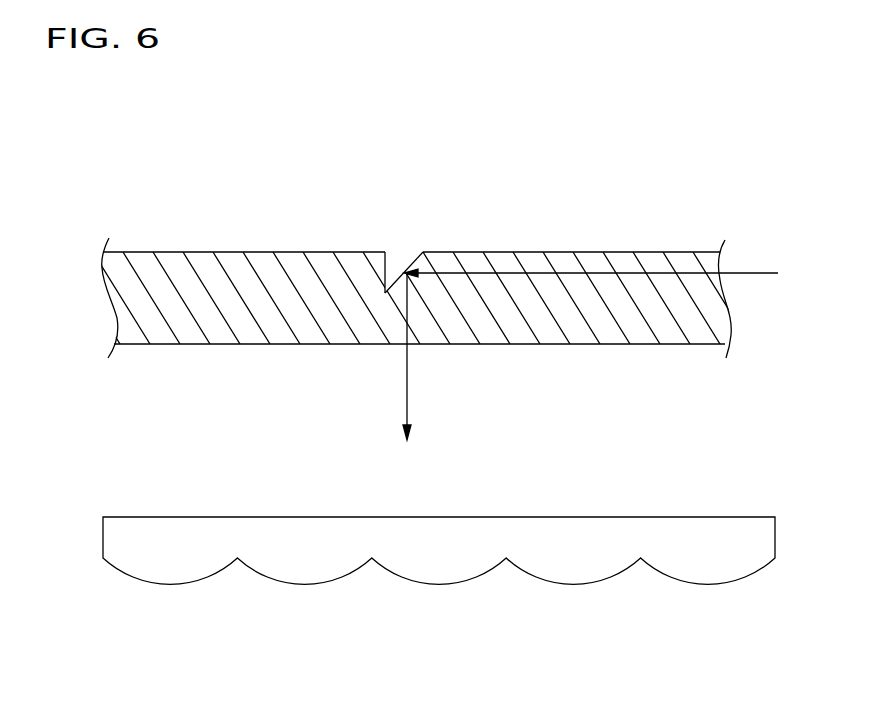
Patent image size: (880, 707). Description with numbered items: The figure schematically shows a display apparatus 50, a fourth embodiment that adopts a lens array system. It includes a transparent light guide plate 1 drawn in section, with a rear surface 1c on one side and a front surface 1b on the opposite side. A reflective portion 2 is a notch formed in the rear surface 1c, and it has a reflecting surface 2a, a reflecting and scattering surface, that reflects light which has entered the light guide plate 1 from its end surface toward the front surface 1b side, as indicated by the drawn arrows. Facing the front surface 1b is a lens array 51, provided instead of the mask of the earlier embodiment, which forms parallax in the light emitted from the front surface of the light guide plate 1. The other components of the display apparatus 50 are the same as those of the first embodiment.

The light guide plate 1 is at (648, 252).
The front surface 1b is at (545, 345).
The rear surface 1c is at (580, 252).
The reflective portion 2 is at (397, 258).
The reflecting surface 2a is at (411, 260).
The display apparatus 50 is at (693, 137).
The lens array 51 is at (714, 584).